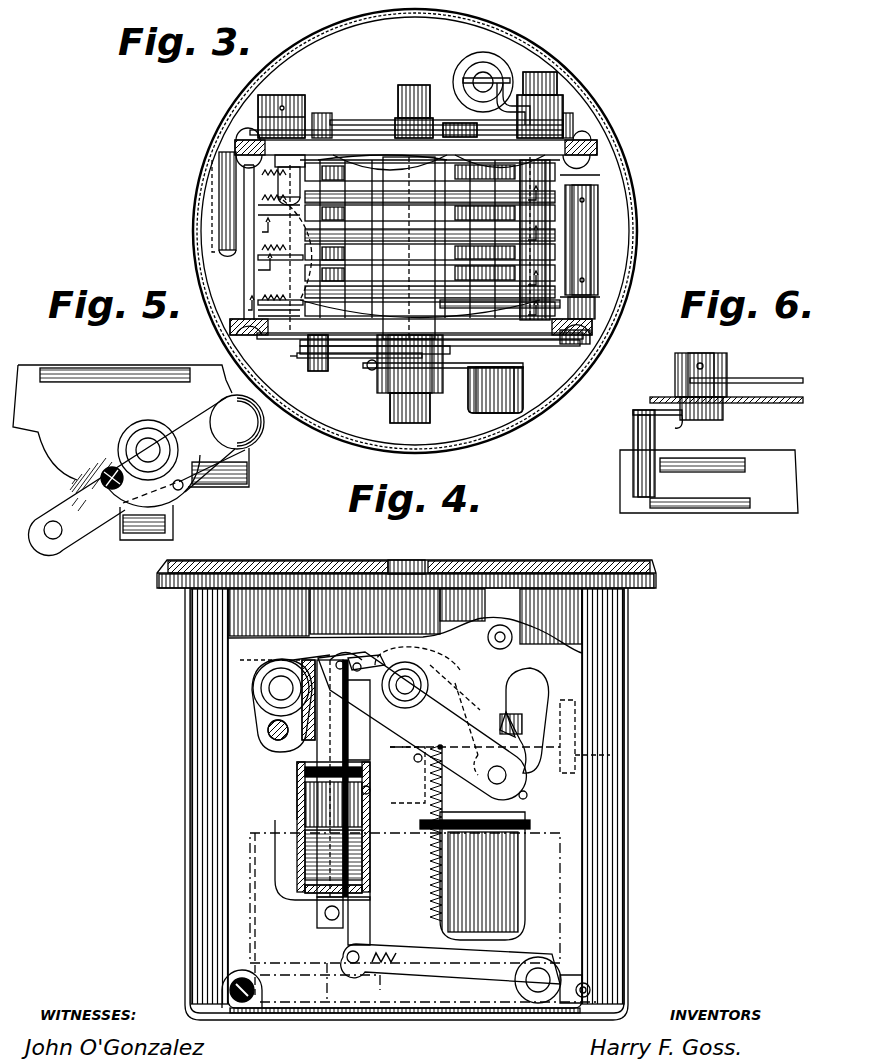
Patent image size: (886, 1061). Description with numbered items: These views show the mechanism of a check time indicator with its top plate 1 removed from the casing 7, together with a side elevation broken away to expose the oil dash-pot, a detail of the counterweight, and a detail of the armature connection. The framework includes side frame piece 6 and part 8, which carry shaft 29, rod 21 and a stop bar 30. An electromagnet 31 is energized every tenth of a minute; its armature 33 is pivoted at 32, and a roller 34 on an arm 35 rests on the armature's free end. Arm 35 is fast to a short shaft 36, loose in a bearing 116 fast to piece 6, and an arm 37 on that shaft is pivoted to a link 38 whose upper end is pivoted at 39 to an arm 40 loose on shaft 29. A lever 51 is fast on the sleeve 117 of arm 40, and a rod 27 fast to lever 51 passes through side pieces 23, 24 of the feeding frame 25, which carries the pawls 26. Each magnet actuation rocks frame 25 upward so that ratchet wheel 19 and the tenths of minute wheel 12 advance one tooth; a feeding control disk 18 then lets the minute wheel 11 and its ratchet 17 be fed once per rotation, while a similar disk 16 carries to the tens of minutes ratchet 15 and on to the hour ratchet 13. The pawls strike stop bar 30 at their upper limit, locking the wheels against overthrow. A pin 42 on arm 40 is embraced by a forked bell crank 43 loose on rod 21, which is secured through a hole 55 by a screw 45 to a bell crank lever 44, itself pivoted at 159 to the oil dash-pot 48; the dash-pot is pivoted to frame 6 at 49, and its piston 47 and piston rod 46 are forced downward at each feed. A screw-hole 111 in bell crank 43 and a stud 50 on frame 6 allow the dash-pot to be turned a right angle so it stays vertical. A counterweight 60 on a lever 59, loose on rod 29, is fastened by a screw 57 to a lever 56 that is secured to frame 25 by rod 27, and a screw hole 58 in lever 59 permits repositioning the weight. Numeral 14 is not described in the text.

In FIG. 4, the top plate 1 is at (520, 570).
In FIG. 3, the side frame piece 6 is at (357, 140).
In FIG. 6, the side frame piece 6 is at (748, 403).
In FIG. 4, the side frame piece 6 is at (560, 665).
In FIG. 3, the casing 7 is at (240, 95).
In FIG. 4, the casing 7 is at (618, 615).
In FIG. 3, the framework part 8 is at (505, 341).
In FIG. 5, the framework part 8 is at (148, 374).
In FIG. 3, the minutes indicating wheel 11 is at (261, 306).
In FIG. 3, the tenths of minute indicating wheel 12 is at (268, 235).
In FIG. 3, the ratchet wheel of hour indicating wheel 13 is at (527, 236).
In FIG. 3, the pawl 14 is at (537, 188).
In FIG. 3, the ratchet wheel of tens of minutes wheel 15 is at (416, 226).
In FIG. 3, the feeding control disk 16 is at (548, 252).
In FIG. 3, the ratchet wheel of minute wheel 17 is at (537, 293).
In FIG. 3, the feeding control disk 18 is at (590, 297).
In FIG. 3, the ratchet wheel 19 is at (470, 308).
In FIG. 3, the rod 21 is at (565, 338).
In FIG. 4, the rod 21 is at (268, 696).
In FIG. 3, the side piece of feeding frame 23 is at (392, 140).
In FIG. 4, the side piece of feeding frame 23 is at (505, 728).
In FIG. 3, the side piece of feeding frame 24 is at (365, 340).
In FIG. 3, the feeding frame 25 is at (247, 285).
In FIG. 4, the feeding frame 25 is at (580, 755).
In FIG. 3, the pawls 26 is at (273, 258).
In FIG. 3, the rod 27 is at (318, 373).
In FIG. 5, the rod 27 is at (52, 540).
In FIG. 4, the rod 27 is at (490, 778).
In FIG. 3, the shaft 29 is at (414, 85).
In FIG. 5, the shaft 29 is at (148, 440).
In FIG. 4, the shaft 29 is at (410, 685).
In FIG. 3, the stop bar 30 is at (300, 140).
In FIG. 3, the electromagnet 31 is at (427, 235).
In FIG. 4, the electromagnet 31 is at (300, 845).
In FIG. 4, the armature pivot 32 is at (248, 1002).
In FIG. 3, the armature 33 is at (212, 238).
In FIG. 6, the armature 33 is at (709, 481).
In FIG. 4, the armature 33 is at (600, 1000).
In FIG. 3, the roller 34 is at (219, 205).
In FIG. 6, the roller 34 is at (633, 458).
In FIG. 6, the arm 35 is at (663, 427).
In FIG. 4, the arm 35 is at (590, 985).
In FIG. 6, the short shaft 36 is at (705, 355).
In FIG. 4, the short shaft 36 is at (538, 992).
In FIG. 3, the arm 37 is at (348, 120).
In FIG. 6, the arm 37 is at (755, 378).
In FIG. 4, the arm 37 is at (420, 972).
In FIG. 3, the link 38 is at (455, 124).
In FIG. 4, the link 38 is at (355, 935).
In FIG. 4, the pivot 39 is at (362, 662).
In FIG. 4, the arm 40 is at (395, 660).
In FIG. 4, the pin 42 is at (360, 660).
In FIG. 3, the bell crank 43 is at (540, 127).
In FIG. 4, the bell crank 43 is at (318, 655).
In FIG. 4, the bell crank lever 44 is at (281, 650).
In FIG. 4, the pin or screw 45 is at (270, 740).
In FIG. 4, the piston rod 46 is at (305, 780).
In FIG. 4, the piston 47 is at (305, 850).
In FIG. 3, the oil dash-pot 48 is at (512, 62).
In FIG. 4, the oil dash-pot 48 is at (300, 890).
In FIG. 4, the pivot 49 is at (317, 915).
In FIG. 4, the stud 50 is at (500, 649).
In FIG. 4, the lever 51 is at (458, 708).
In FIG. 4, the hole 55 is at (340, 730).
In FIG. 3, the lever 56 is at (355, 359).
In FIG. 5, the lever 56 is at (90, 520).
In FIG. 3, the screw 57 is at (372, 372).
In FIG. 5, the screw 57 is at (108, 466).
In FIG. 5, the screw hole 58 is at (183, 488).
In FIG. 3, the lever 59 is at (462, 370).
In FIG. 5, the lever 59 is at (235, 450).
In FIG. 3, the counterweight 60 is at (495, 390).
In FIG. 5, the counterweight 60 is at (254, 428).
In FIG. 4, the screw-hole 111 is at (345, 700).
In FIG. 6, the bearing 116 is at (676, 385).
In FIG. 4, the sleeve 117 is at (425, 712).
In FIG. 4, the pivot 159 is at (340, 660).